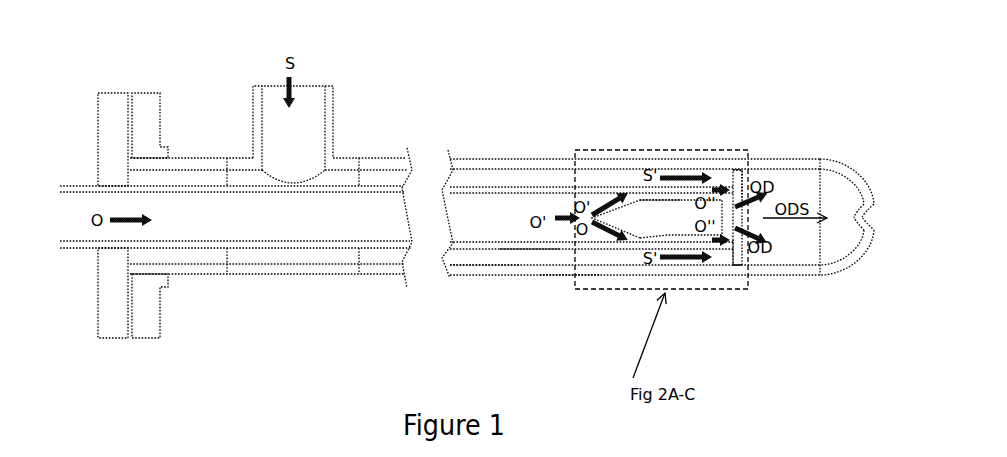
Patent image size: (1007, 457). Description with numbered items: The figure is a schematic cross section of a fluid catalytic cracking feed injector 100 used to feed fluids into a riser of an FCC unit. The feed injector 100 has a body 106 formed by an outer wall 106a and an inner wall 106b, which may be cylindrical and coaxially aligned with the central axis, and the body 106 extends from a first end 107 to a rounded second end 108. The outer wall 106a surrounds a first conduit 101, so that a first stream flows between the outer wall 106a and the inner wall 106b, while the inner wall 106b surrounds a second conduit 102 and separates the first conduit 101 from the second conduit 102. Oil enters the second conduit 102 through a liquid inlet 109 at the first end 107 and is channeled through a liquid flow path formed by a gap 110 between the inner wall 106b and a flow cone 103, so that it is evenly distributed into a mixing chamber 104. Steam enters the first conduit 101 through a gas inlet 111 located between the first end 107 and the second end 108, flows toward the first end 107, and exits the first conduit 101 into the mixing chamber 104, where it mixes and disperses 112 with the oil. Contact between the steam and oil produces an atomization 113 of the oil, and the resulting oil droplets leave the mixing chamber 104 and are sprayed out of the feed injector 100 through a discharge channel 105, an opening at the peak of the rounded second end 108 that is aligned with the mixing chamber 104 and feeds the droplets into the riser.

The feed injector 100 is at (587, 117).
The first conduit 101 is at (567, 177).
The second conduit 102 is at (505, 203).
The flow cone 103 is at (640, 218).
The mixing chamber 104 is at (727, 253).
The discharge channel 105 is at (867, 227).
The body 106 is at (452, 278).
The outer wall 106a is at (567, 268).
The inner wall 106b is at (523, 248).
The first end 107 is at (183, 312).
The second end 108 is at (853, 131).
The liquid inlet 109 is at (73, 207).
The gap 110 is at (640, 198).
The gas inlet 111 is at (312, 103).
The mixing and dispersing 112 is at (721, 175).
The atomization 113 is at (743, 258).